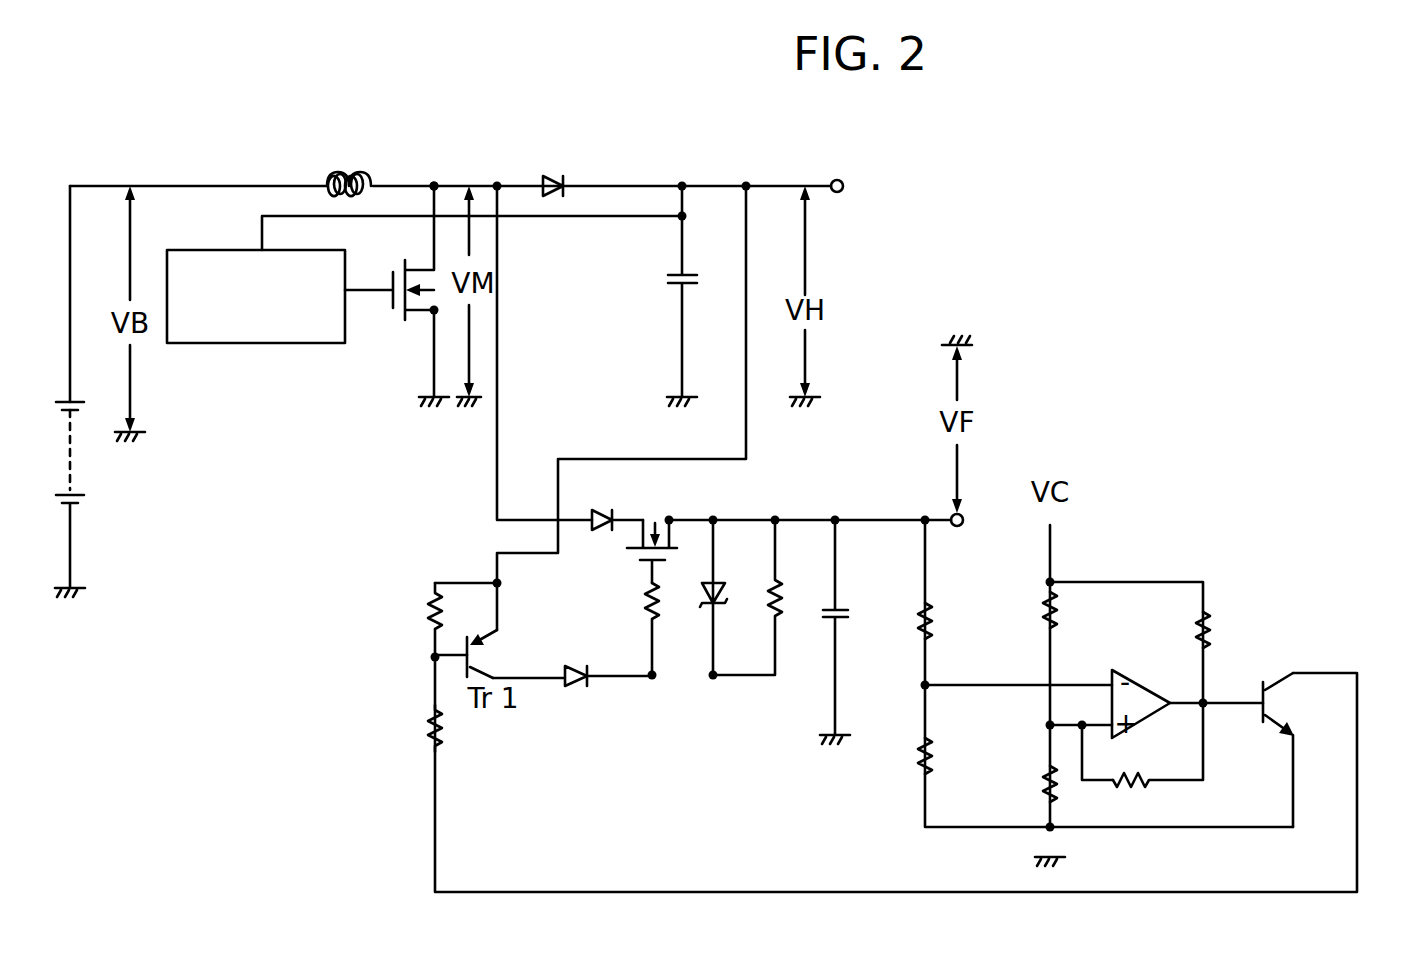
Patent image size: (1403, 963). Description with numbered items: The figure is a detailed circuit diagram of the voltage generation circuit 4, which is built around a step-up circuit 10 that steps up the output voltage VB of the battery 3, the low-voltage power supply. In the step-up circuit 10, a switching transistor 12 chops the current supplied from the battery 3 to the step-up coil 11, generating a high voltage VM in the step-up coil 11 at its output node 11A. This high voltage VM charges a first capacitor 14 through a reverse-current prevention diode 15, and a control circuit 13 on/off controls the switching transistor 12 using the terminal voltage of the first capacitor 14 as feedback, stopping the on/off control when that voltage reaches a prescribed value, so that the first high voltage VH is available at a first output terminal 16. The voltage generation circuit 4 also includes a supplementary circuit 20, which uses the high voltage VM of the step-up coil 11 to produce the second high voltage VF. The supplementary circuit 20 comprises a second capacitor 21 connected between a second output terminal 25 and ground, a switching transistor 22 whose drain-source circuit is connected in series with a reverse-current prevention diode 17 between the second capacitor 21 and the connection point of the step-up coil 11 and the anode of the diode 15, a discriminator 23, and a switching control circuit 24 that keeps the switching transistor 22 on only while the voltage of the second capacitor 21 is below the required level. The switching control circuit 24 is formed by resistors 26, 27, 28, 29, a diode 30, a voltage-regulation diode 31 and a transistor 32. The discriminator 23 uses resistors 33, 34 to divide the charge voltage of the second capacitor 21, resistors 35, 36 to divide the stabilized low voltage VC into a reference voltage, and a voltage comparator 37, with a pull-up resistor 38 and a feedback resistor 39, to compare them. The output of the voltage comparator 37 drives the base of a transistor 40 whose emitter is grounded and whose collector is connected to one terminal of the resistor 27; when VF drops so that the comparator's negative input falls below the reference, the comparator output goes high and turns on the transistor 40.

The battery 3 is at (72, 462).
The voltage generation circuit 4 is at (1005, 243).
The step-up circuit 10 is at (460, 166).
The step-up coil 11 is at (347, 170).
The connection node 11A is at (434, 180).
The switching transistor 12 is at (388, 302).
The control circuit 13 is at (262, 343).
The first capacitor 14 is at (668, 280).
The reverse-current prevention diode 15 is at (553, 176).
The first output terminal 16 is at (838, 179).
The reverse-current prevention diode 17 is at (600, 508).
The supplementary circuit 20 is at (1158, 538).
The second capacitor 21 is at (848, 612).
The switching transistor 22 is at (655, 521).
The discriminator 23 is at (1230, 675).
The switching control circuit 24 is at (431, 657).
The second output terminal 25 is at (963, 524).
The resistor 26 is at (429, 612).
The resistor 27 is at (429, 735).
The resistor 28 is at (645, 601).
The resistor 29 is at (780, 590).
The diode 30 is at (577, 688).
The voltage-regulation diode 31 is at (718, 592).
The transistor 32 is at (477, 655).
The resistor 33 is at (932, 623).
The resistor 34 is at (932, 755).
The resistor 35 is at (1057, 612).
The resistor 36 is at (1045, 785).
The voltage comparator 37 is at (1141, 718).
The pull-up resistor 38 is at (1209, 623).
The feedback resistor 39 is at (1142, 786).
The transistor 40 is at (1283, 705).